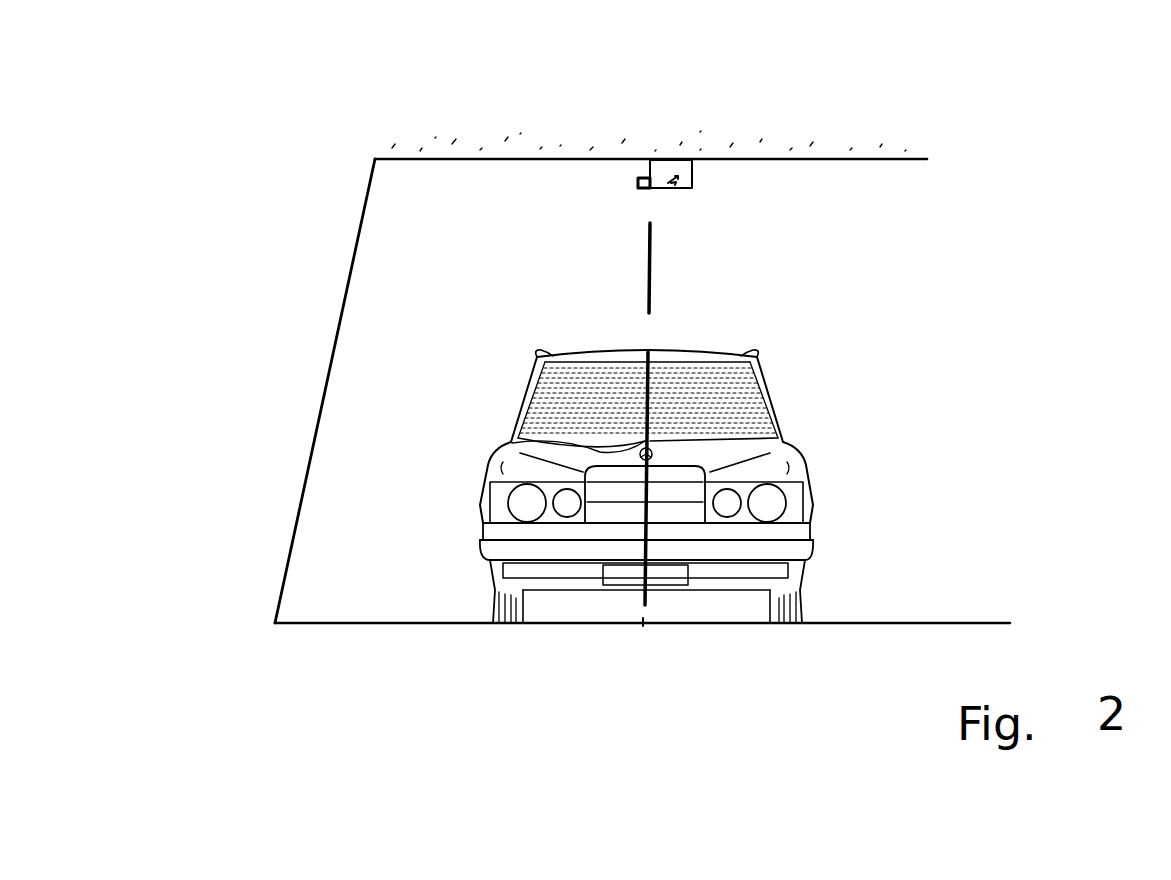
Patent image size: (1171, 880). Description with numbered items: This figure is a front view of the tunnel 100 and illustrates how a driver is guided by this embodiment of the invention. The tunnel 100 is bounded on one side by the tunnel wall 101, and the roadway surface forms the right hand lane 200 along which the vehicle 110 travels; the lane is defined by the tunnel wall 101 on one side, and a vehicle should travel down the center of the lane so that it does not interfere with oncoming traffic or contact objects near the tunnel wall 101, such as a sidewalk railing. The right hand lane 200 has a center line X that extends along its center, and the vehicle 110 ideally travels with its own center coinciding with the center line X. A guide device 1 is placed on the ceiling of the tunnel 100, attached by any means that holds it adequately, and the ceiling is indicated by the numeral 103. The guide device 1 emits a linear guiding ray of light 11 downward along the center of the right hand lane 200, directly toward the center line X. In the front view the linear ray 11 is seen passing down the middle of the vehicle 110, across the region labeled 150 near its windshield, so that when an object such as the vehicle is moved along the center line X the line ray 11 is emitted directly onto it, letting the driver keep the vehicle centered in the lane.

The tunnel 100 is at (245, 272).
The tunnel wall 101 is at (292, 541).
The ceiling 103 is at (830, 158).
The right hand lane 200 is at (588, 626).
The guide device 1 is at (686, 190).
The linear ray of light 11 is at (648, 599).
The vehicle 110 is at (808, 470).
The windshield 150 is at (512, 441).
The center line X is at (643, 633).